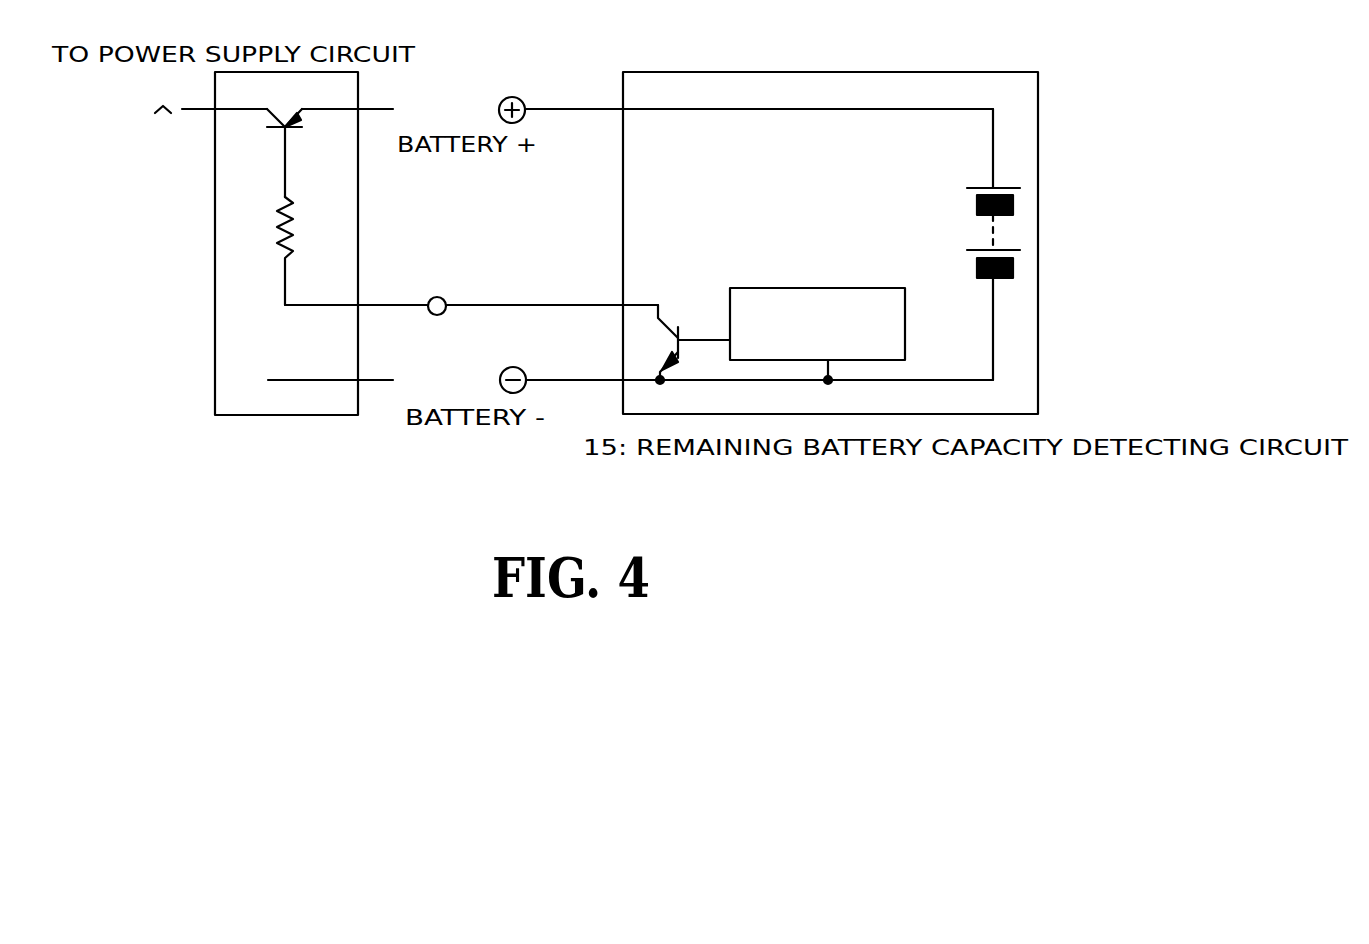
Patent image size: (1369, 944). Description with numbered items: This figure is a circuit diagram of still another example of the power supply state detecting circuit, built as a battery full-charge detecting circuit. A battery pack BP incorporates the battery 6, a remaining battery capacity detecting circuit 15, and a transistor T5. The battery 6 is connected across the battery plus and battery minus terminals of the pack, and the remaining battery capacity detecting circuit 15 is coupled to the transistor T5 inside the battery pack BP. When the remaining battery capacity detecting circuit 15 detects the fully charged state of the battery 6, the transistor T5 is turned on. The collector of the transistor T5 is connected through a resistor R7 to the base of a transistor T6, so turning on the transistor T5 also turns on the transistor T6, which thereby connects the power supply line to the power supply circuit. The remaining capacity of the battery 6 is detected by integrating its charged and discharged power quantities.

The remaining battery capacity detecting circuit 15 is at (810, 288).
The battery 6 is at (975, 230).
The battery pack BP is at (925, 72).
The transistor T5 is at (693, 339).
The transistor T6 is at (299, 153).
The resistor R7 is at (305, 251).